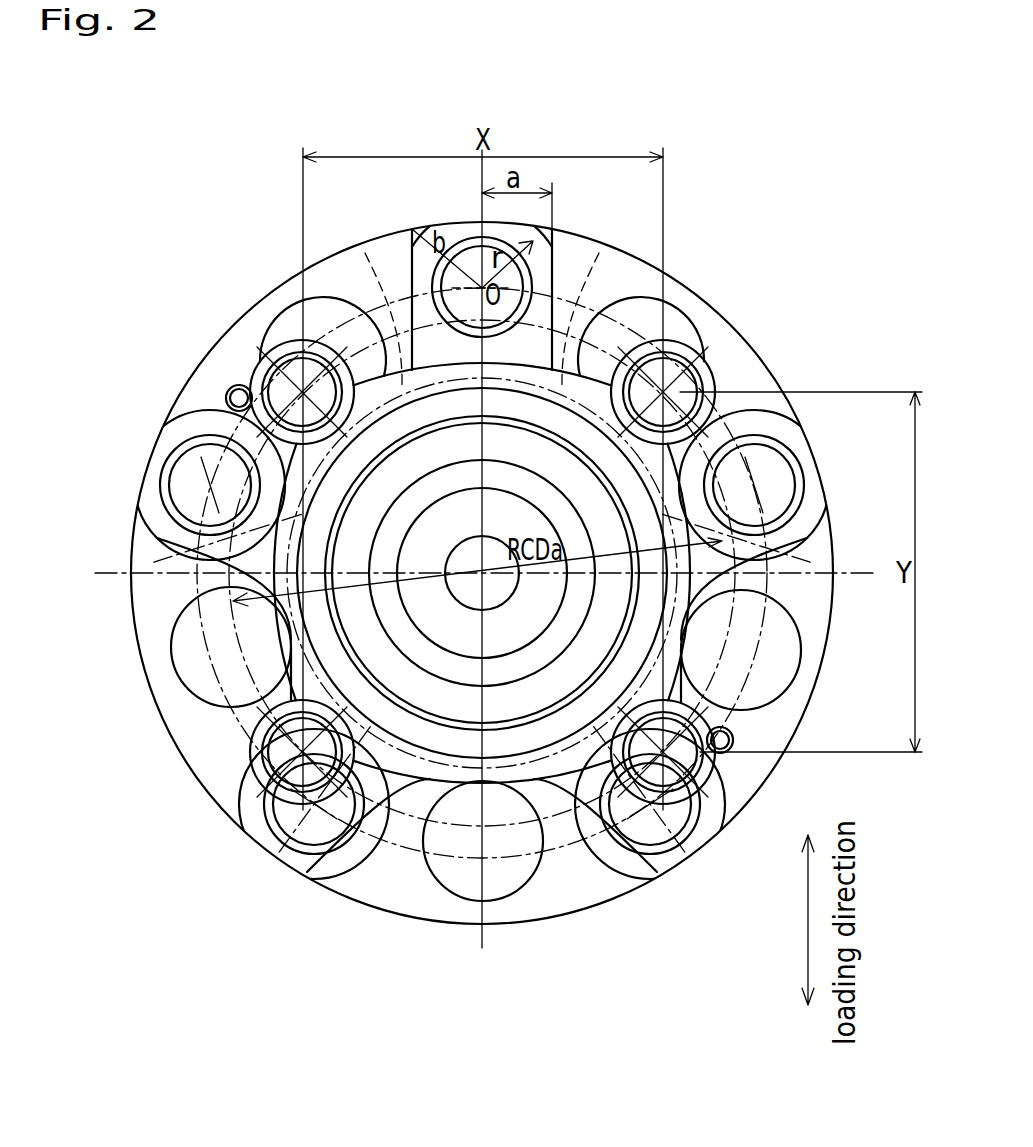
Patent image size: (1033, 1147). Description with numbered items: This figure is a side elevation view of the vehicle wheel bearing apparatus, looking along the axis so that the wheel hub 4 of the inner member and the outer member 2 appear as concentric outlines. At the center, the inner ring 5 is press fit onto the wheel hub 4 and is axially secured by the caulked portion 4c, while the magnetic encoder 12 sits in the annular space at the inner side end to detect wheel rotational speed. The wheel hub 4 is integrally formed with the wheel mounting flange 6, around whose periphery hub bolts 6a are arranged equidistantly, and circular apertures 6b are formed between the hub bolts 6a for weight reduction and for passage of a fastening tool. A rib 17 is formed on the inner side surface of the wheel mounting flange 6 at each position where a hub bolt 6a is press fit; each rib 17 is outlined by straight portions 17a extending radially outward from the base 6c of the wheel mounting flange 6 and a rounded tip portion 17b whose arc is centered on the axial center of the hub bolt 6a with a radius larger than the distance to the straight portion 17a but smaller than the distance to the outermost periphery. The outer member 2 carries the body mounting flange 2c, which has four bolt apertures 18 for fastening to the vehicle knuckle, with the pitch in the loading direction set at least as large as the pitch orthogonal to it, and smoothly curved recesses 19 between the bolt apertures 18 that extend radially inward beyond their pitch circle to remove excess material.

The outer member 2 is at (514, 393).
The body mounting flange 2c is at (736, 411).
The wheel hub 4 is at (153, 585).
The caulked portion 4c is at (480, 525).
The inner ring 5 is at (514, 493).
The wheel mounting flange 6 is at (240, 350).
The hub bolt 6a is at (471, 238).
The circular aperture 6b is at (298, 305).
The base of the wheel mounting flange 6c is at (373, 252).
The magnetic encoder 12 is at (462, 455).
The rib 17 is at (280, 580).
The straight portion 17a is at (555, 250).
The rounded tip portion 17b is at (578, 248).
The bolt aperture 18 is at (668, 350).
The recess 19 is at (718, 454).